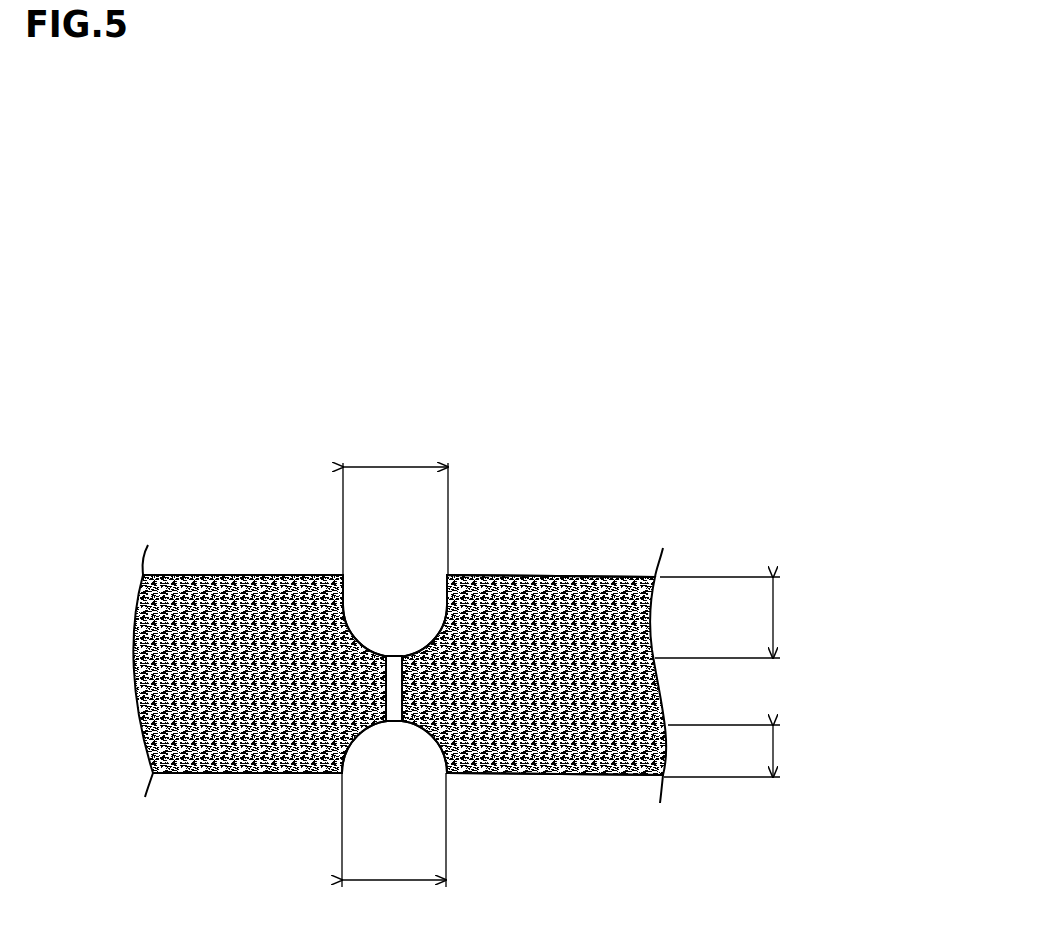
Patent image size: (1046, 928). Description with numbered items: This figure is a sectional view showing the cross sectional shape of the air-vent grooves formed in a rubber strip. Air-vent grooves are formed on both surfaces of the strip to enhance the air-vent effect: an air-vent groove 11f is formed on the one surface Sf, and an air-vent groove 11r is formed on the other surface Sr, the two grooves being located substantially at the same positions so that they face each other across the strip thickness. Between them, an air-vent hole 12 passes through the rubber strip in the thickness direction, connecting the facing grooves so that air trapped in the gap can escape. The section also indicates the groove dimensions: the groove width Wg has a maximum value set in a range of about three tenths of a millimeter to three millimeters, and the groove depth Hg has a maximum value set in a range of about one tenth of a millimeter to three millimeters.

The one surface Sf is at (178, 573).
The other surface Sr is at (175, 773).
The air-vent groove 11f is at (412, 620).
The air-vent groove 11r is at (368, 750).
The air-vent hole 12 is at (392, 690).
The groove width Wg is at (393, 673).
The groove depth Hg is at (781, 677).